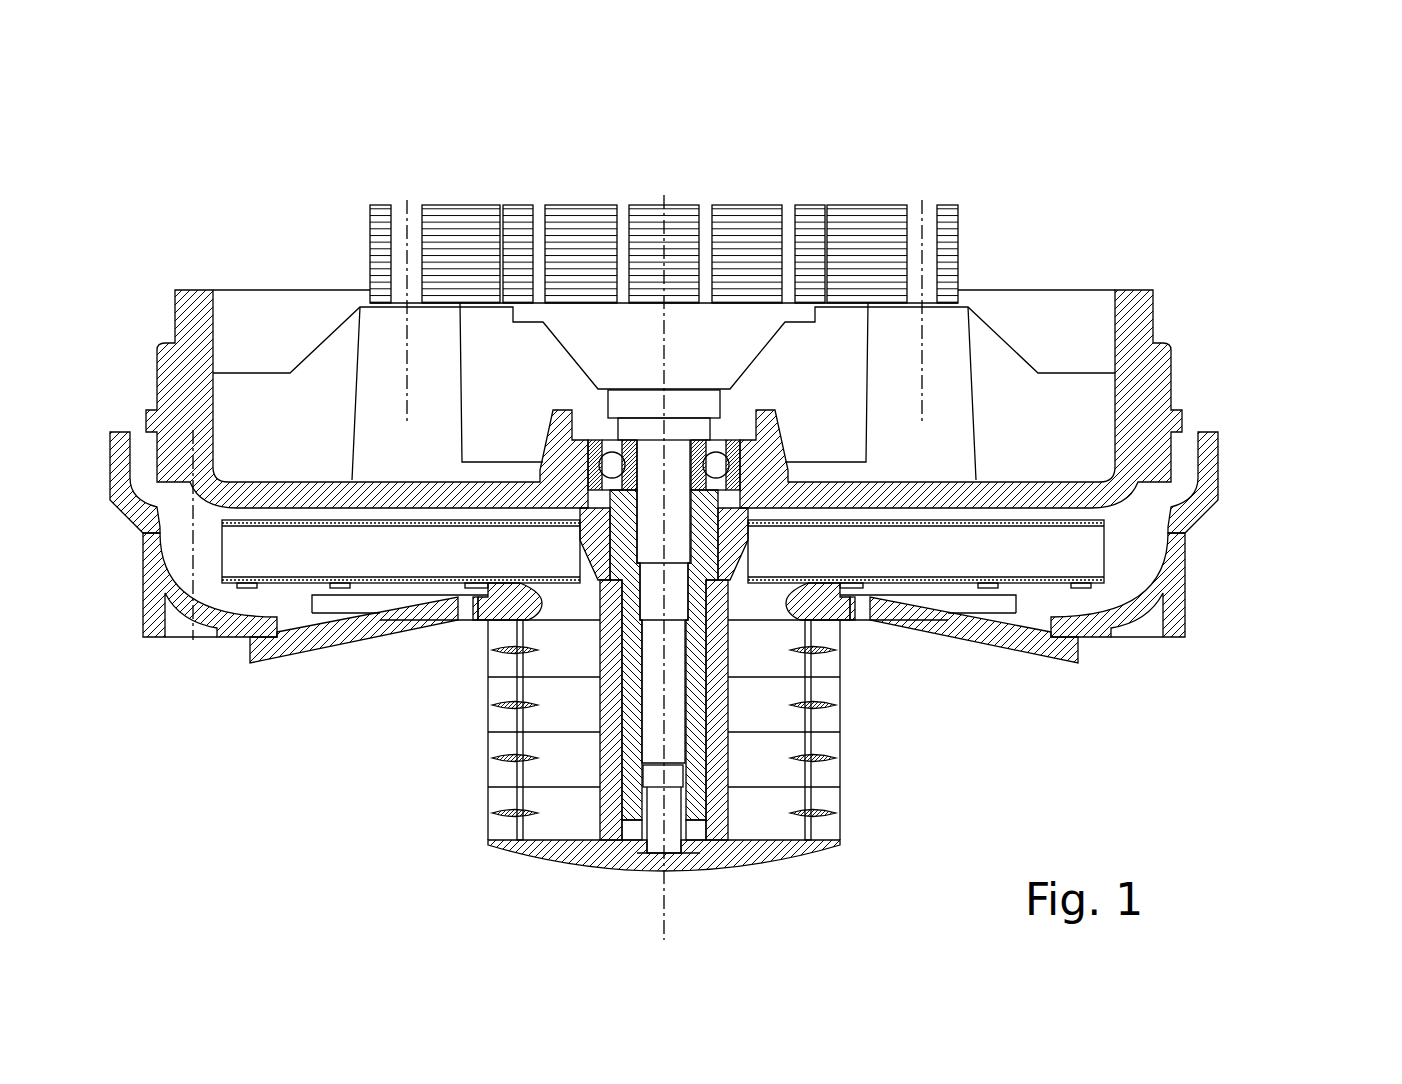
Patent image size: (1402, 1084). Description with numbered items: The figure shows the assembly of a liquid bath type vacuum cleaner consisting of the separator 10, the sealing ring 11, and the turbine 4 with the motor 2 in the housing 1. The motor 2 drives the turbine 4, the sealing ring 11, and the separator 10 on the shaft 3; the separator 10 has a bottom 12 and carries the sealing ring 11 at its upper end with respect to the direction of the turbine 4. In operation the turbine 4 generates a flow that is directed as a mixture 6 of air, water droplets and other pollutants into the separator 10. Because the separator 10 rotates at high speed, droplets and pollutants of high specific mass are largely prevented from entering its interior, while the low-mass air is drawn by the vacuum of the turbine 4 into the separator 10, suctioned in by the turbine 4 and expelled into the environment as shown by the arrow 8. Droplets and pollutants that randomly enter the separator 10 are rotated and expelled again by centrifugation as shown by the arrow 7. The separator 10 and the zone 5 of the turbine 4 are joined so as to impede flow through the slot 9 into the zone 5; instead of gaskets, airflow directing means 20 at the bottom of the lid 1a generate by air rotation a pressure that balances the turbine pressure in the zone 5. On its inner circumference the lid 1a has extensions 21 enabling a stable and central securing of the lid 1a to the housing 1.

The housing 1 is at (1153, 370).
The lid 1a is at (1173, 563).
The motor 2 is at (690, 343).
The shaft 3 is at (662, 670).
The turbine 4 is at (322, 550).
The zone of the turbine 5 is at (193, 527).
The mixture 6 is at (440, 694).
The arrow 7 is at (440, 665).
The arrow 8 is at (128, 403).
The slot 9 is at (475, 597).
The separator 10 is at (612, 753).
The sealing ring 11 is at (510, 600).
The bottom 12 is at (590, 863).
The airflow directing means 20 is at (1050, 655).
The extensions 21 is at (147, 479).